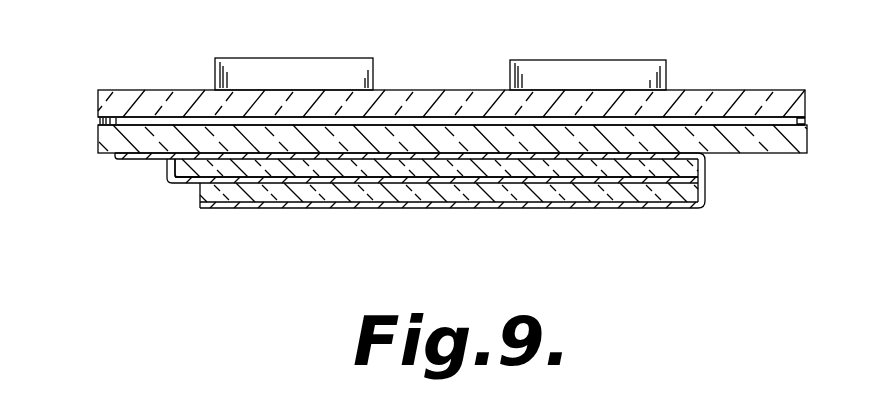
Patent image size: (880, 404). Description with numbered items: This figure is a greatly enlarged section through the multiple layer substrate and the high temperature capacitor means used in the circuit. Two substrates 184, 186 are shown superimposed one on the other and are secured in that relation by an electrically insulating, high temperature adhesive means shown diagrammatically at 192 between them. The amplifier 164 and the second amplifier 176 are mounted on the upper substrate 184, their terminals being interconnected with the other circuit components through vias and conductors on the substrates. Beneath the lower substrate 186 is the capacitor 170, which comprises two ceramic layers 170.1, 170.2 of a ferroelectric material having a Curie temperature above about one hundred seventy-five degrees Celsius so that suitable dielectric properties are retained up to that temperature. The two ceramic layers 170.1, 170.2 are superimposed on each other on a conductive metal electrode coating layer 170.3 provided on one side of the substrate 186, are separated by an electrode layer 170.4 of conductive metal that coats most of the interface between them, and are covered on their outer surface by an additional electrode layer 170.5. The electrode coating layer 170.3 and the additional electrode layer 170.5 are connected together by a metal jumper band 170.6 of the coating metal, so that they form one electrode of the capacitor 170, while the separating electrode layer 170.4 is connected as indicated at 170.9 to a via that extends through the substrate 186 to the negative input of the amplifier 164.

The amplifier 164 is at (278, 66).
The second amplifier 176 is at (556, 70).
The substrate 184 is at (747, 98).
The adhesive means 192 is at (803, 122).
The substrate 186 is at (759, 156).
The capacitor 170 is at (408, 211).
The ceramic layer 170.1 is at (447, 173).
The ceramic layer 170.2 is at (525, 197).
The electrode coating layer 170.3 is at (130, 161).
The electrode layer 170.4 is at (332, 183).
The additional electrode layer 170.5 is at (232, 207).
The metal jumper band 170.6 is at (705, 191).
The connection of separating electrode 170.9 is at (168, 165).